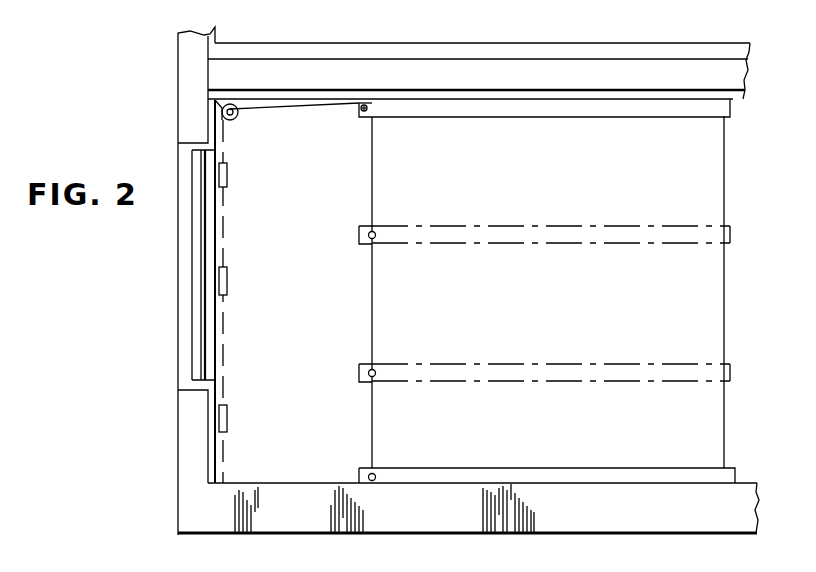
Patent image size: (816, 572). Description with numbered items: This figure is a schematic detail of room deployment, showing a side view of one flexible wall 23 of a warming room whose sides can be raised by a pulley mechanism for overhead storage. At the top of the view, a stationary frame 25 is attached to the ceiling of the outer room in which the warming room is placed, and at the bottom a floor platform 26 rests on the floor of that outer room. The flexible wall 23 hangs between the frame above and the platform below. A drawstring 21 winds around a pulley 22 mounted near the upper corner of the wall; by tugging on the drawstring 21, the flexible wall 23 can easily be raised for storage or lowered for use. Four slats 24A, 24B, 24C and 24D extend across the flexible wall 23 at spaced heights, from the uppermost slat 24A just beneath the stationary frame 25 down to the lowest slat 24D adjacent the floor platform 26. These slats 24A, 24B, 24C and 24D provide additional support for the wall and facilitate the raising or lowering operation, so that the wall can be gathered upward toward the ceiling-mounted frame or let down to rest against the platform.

The drawstring 21 is at (226, 143).
The pulley 22 is at (228, 110).
The flexible wall 23 is at (518, 140).
The slat 24A is at (731, 108).
The slat 24B is at (731, 228).
The slat 24C is at (730, 375).
The slat 24D is at (727, 477).
The stationary frame 25 is at (706, 57).
The floor platform 26 is at (700, 518).